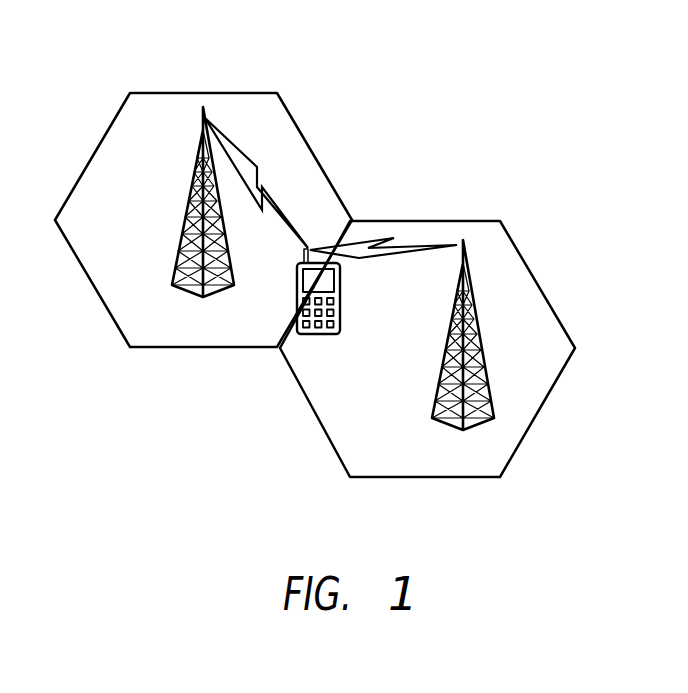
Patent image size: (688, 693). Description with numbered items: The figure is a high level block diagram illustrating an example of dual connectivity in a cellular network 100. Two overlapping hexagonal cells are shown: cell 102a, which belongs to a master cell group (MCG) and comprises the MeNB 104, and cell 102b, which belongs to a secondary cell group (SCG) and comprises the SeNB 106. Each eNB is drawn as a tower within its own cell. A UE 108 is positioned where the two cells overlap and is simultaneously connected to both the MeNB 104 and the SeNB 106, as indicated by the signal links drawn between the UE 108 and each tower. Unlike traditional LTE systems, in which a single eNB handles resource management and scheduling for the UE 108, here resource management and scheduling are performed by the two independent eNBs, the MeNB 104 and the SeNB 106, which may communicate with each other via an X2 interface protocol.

The cellular network 100 is at (505, 70).
The cell 102a is at (92, 283).
The cell 102b is at (538, 411).
The MeNB 104 is at (185, 204).
The SeNB 106 is at (443, 348).
The UE 108 is at (326, 335).